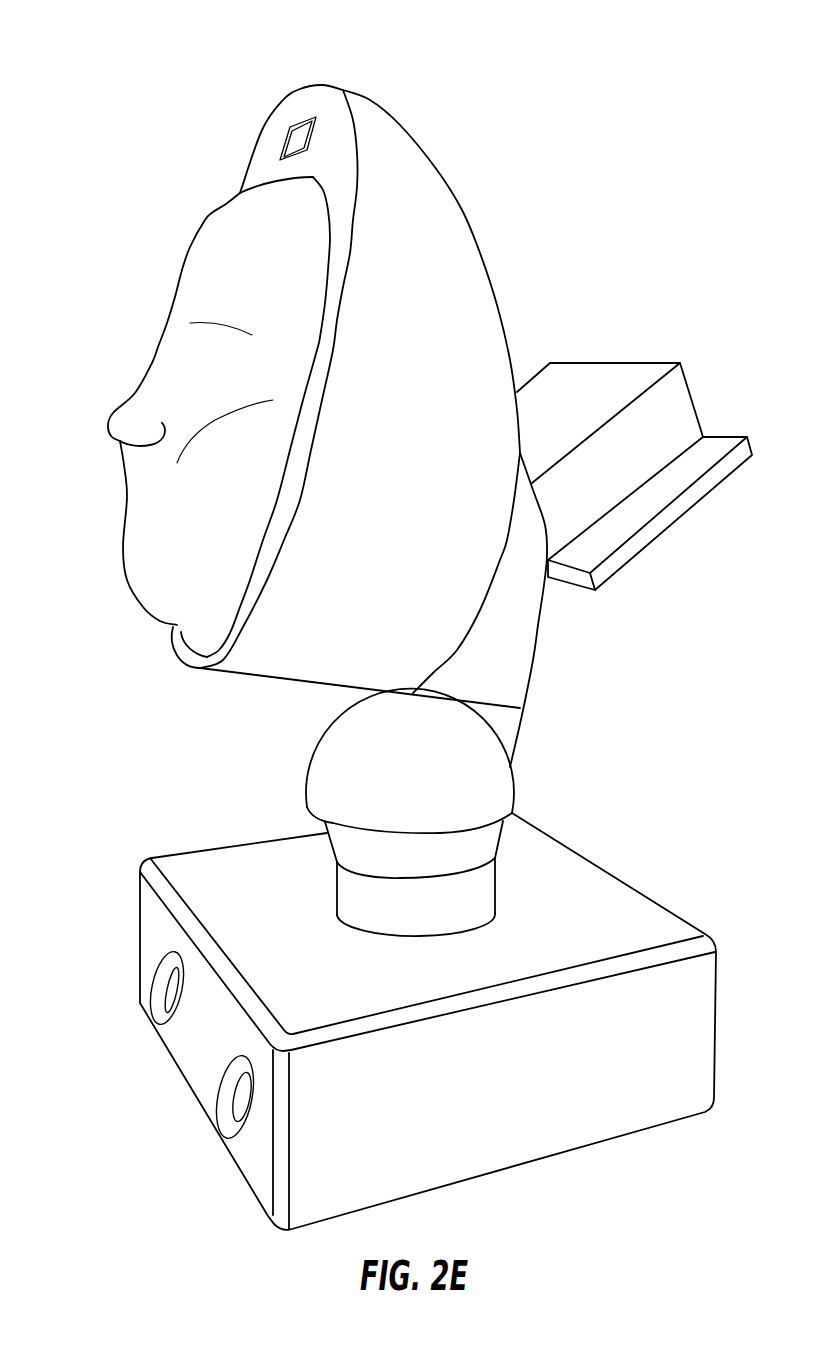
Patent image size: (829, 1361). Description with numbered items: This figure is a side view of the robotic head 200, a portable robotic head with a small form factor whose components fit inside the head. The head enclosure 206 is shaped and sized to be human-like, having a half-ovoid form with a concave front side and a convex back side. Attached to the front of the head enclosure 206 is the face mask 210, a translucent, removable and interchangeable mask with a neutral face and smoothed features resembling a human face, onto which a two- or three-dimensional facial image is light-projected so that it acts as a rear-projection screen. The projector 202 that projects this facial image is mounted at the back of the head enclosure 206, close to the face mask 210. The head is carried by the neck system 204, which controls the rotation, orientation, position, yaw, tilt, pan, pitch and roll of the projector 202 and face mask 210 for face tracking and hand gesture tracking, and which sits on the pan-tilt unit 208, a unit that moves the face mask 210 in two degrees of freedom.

The robotic head 200 is at (690, 55).
The projector 202 is at (623, 383).
The neck system 204 is at (322, 823).
The head enclosure 206 is at (410, 185).
The pan-tilt unit 208 is at (192, 866).
The face mask 210 is at (198, 262).